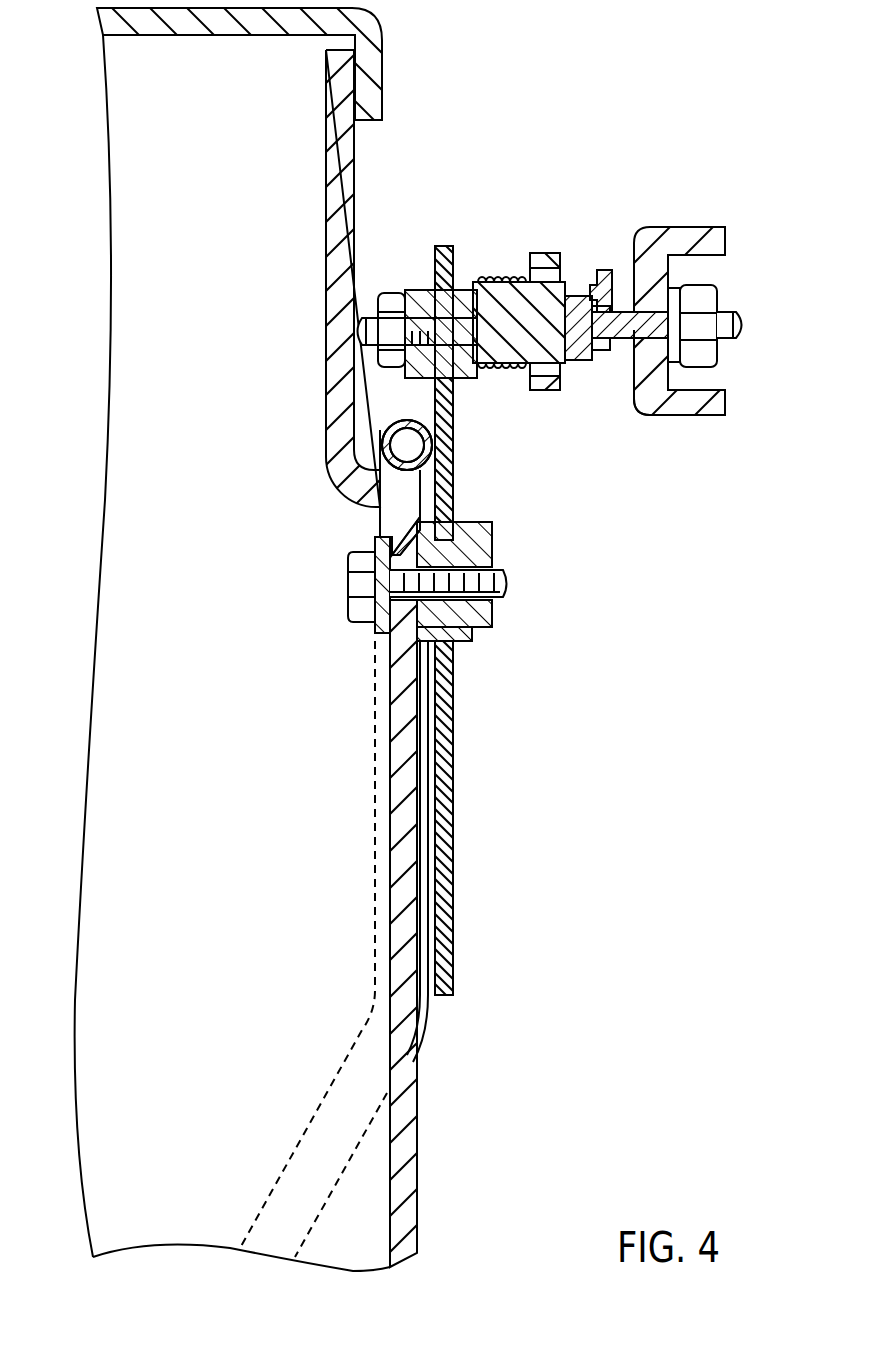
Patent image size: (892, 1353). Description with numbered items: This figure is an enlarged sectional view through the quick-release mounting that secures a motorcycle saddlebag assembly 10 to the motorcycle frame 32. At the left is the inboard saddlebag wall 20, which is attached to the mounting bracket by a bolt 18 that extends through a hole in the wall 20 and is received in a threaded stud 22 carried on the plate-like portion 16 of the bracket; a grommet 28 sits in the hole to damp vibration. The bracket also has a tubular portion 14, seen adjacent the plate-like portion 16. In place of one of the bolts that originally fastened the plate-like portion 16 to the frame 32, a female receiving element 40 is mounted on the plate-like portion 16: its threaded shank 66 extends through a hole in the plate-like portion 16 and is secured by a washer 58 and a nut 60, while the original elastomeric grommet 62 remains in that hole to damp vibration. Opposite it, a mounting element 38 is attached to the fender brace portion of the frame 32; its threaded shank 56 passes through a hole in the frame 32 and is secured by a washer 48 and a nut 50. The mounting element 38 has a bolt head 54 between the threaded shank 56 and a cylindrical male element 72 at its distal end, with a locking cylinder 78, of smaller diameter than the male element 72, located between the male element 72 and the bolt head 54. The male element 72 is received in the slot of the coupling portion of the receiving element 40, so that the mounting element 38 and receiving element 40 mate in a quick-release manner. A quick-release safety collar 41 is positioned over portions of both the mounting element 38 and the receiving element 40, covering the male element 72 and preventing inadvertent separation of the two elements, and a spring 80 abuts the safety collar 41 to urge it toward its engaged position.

The saddlebag assembly 10 is at (408, 1100).
The tubular portion 14 is at (394, 433).
The plate-like portion 16 is at (452, 793).
The bolt 18 is at (348, 578).
The saddlebag wall 20 is at (337, 161).
The threaded stud 22 is at (492, 606).
The grommet 28 is at (470, 638).
The frame 32 is at (697, 228).
The mounting element 38 is at (616, 246).
The female receiving element 40 is at (494, 228).
The quick-release safety collar 41 is at (543, 262).
The washer 48 is at (683, 290).
The nut 50 is at (705, 355).
The bolt head 54 is at (618, 353).
The threaded shank 56 is at (740, 322).
The washer 58 is at (408, 306).
The nut 60 is at (377, 303).
The elastomeric grommet 62 is at (430, 286).
The threaded shank 66 is at (360, 338).
The male element 72 is at (580, 362).
The locking cylinder 78 is at (601, 352).
The spring 80 is at (504, 378).